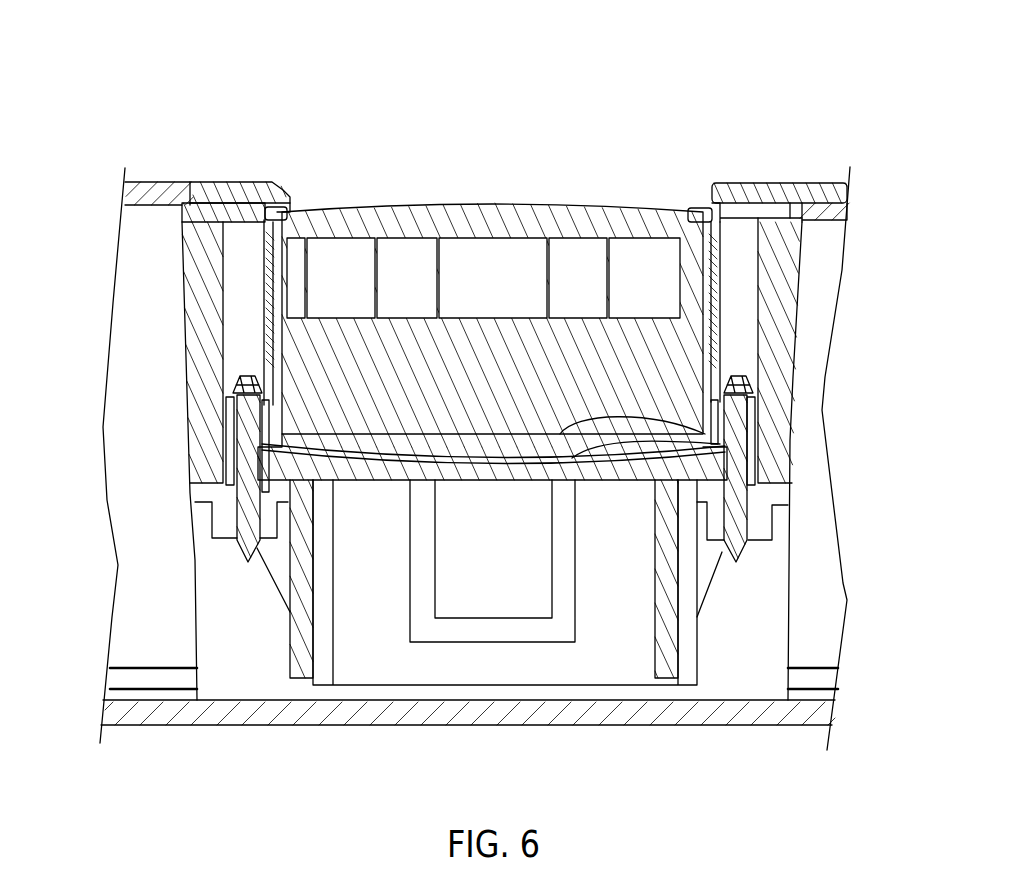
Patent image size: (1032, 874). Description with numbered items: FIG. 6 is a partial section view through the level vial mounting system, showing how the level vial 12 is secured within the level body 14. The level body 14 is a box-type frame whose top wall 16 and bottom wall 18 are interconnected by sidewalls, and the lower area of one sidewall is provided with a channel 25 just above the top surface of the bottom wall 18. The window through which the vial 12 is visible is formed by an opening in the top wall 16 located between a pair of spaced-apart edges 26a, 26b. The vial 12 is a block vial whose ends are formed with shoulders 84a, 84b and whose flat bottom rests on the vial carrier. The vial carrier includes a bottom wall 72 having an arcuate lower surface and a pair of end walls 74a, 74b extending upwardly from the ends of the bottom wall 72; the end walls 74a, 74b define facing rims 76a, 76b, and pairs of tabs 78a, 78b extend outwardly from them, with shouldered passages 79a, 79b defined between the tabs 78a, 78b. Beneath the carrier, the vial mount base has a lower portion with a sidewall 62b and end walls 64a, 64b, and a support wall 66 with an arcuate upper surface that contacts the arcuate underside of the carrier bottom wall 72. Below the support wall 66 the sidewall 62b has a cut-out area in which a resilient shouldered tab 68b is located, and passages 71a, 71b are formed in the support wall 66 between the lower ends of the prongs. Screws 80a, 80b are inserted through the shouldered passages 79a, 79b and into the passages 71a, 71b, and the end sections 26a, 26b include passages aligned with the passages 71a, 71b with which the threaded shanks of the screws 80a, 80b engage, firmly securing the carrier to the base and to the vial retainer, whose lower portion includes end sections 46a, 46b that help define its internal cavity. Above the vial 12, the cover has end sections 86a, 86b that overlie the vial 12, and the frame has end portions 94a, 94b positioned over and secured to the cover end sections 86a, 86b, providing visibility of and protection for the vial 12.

The level vial 12 is at (465, 197).
The level body 14 is at (153, 180).
The top wall 16 is at (820, 187).
The bottom wall 18 is at (703, 733).
The channel 25 is at (817, 682).
The spaced-apart edge 26a is at (203, 182).
The spaced-apart edge 26b is at (773, 182).
The end section 46a is at (212, 520).
The end section 46b is at (773, 512).
The sidewall 62b is at (392, 650).
The end wall 64a is at (347, 642).
The end wall 64b is at (650, 637).
The support wall 66 is at (728, 463).
The resilient shouldered tab 68b is at (473, 594).
The passage 71a is at (232, 478).
The passage 71b is at (748, 477).
The bottom wall 72 is at (706, 440).
The end wall 74a is at (212, 236).
The end wall 74b is at (725, 298).
The rim 76a is at (308, 212).
The rim 76b is at (690, 217).
The tab 78a is at (262, 366).
The tab 78b is at (722, 352).
The shouldered passage 79a is at (262, 405).
The shouldered passage 79b is at (757, 403).
The screw 80a is at (275, 420).
The screw 80b is at (752, 378).
The shoulder 84a is at (298, 205).
The shoulder 84b is at (690, 215).
The end section 86a is at (248, 186).
The end section 86b is at (743, 182).
The end portion 94a is at (215, 182).
The end portion 94b is at (762, 182).